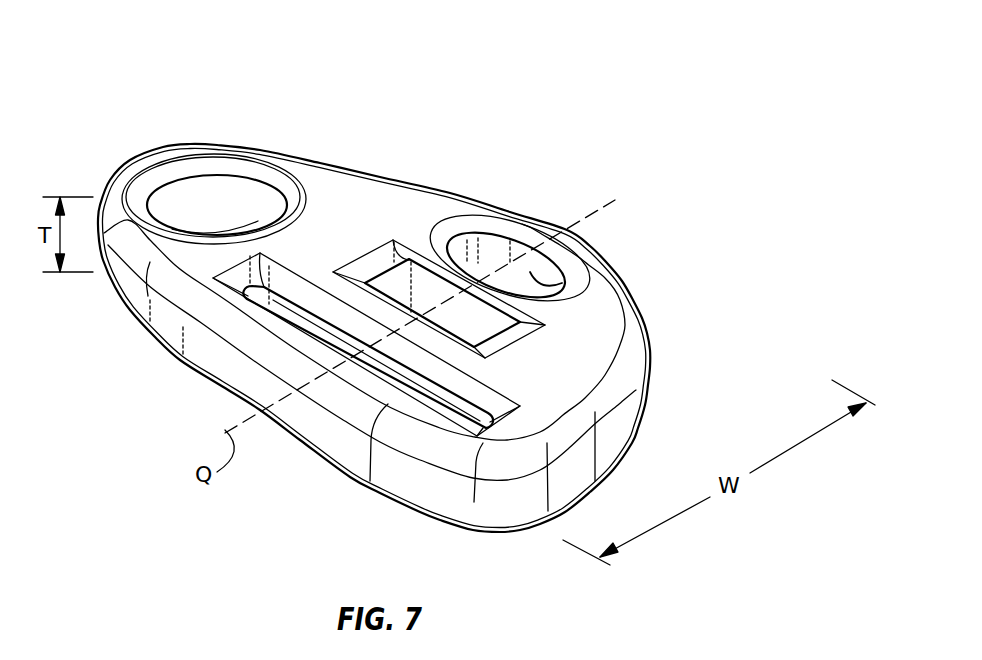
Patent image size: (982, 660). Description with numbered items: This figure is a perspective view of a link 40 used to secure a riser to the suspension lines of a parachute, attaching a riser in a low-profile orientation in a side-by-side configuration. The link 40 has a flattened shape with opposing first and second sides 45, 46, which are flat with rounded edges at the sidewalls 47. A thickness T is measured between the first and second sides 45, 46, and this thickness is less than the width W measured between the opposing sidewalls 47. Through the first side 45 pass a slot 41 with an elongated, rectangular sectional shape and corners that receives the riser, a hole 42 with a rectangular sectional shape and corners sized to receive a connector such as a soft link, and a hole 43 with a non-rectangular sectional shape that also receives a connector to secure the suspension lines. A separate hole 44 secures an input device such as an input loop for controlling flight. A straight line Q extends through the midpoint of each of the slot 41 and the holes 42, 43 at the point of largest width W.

The link 40 is at (602, 175).
The slot 41 is at (448, 410).
The hole 42 is at (473, 332).
The hole 43 is at (528, 272).
The separate hole 44 is at (230, 197).
The first side 45 is at (348, 197).
The second side 46 is at (356, 478).
The sidewalls 47 is at (237, 372).